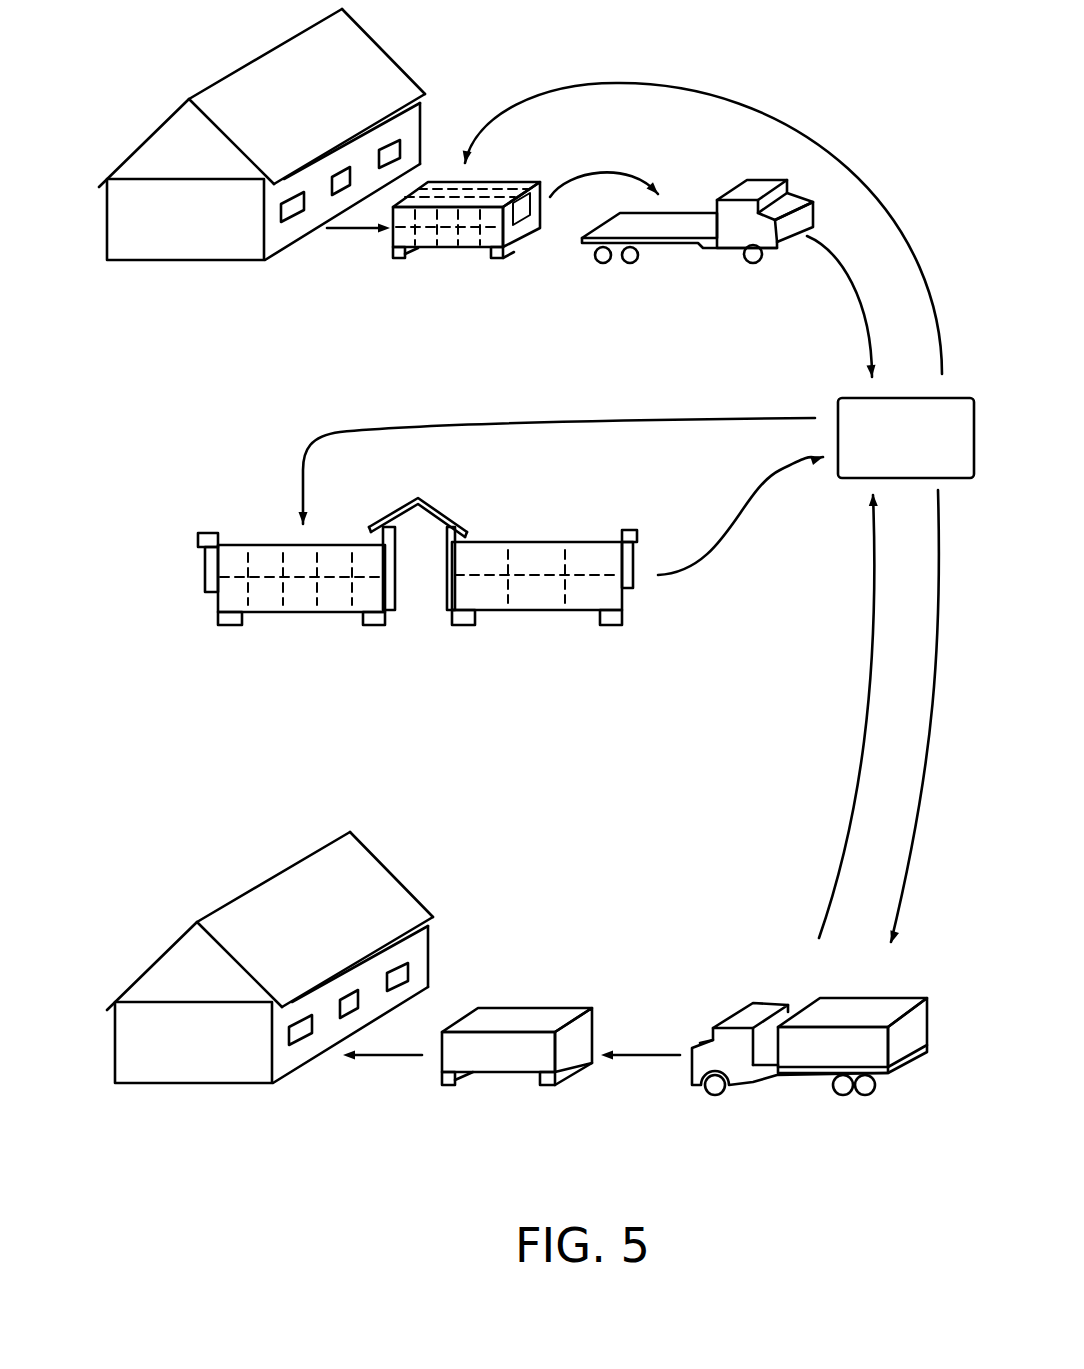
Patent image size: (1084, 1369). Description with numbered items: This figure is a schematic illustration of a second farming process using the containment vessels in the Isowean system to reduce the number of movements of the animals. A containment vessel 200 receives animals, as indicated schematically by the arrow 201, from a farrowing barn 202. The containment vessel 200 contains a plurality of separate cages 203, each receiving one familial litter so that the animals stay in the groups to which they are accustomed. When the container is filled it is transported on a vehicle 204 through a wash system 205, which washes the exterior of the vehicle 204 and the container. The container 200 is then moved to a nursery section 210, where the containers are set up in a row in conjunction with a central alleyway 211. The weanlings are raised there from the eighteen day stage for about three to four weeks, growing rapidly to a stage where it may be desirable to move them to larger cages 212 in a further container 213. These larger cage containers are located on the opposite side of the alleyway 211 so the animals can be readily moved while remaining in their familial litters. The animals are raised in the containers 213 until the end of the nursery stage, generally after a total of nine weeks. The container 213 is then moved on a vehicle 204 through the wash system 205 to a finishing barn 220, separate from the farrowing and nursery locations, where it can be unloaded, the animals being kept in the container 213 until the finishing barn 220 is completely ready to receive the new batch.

The containment vessel 200 is at (484, 176).
The arrow 201 is at (350, 230).
The farrowing barn 202 is at (217, 238).
The cages 203 is at (455, 240).
The vehicle 204 is at (719, 250).
The wash system 205 is at (850, 395).
The nursery section 210 is at (426, 662).
The central alleyway 211 is at (434, 498).
The larger cages 212 is at (545, 595).
The further container 213 is at (548, 538).
The finishing barn 220 is at (230, 1058).